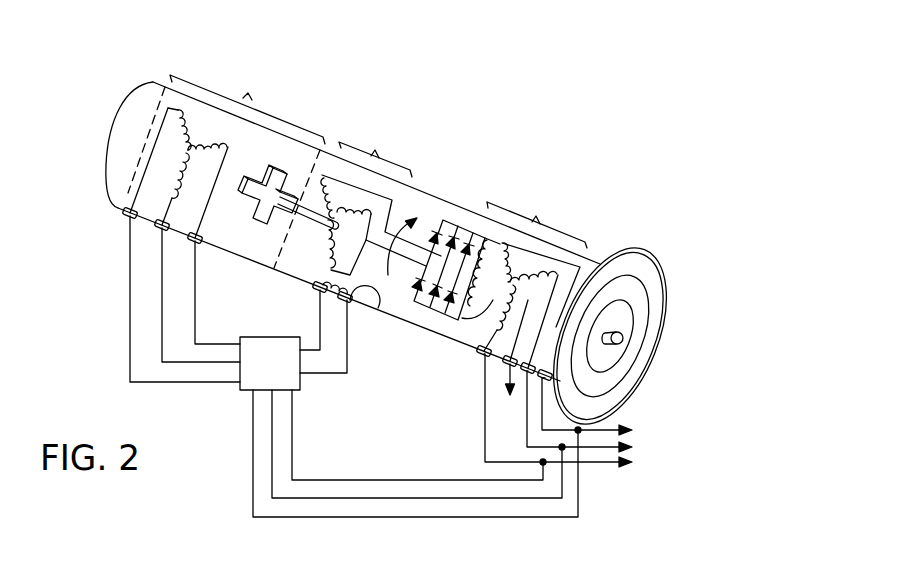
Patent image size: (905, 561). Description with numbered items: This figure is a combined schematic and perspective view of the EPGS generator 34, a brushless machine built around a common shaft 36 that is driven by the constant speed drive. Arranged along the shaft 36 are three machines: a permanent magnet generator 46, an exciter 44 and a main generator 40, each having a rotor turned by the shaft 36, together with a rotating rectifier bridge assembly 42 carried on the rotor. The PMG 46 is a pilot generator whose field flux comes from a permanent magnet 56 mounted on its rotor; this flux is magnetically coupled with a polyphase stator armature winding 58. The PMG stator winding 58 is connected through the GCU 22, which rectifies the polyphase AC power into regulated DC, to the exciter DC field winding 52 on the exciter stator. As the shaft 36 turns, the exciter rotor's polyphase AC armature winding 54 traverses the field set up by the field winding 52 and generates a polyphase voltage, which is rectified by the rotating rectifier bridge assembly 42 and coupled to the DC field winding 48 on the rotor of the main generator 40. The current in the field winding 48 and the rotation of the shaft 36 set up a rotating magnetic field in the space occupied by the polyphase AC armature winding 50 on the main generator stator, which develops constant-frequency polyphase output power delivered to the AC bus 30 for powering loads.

The GCU 22 is at (255, 337).
The AC bus 30 is at (640, 425).
The generator 34 is at (522, 132).
The common shaft 36 is at (624, 340).
The main generator 40 is at (537, 217).
The rotating rectifier bridge assembly 42 is at (455, 213).
The exciter 44 is at (375, 150).
The permanent magnet generator (PMG) 46 is at (247, 108).
The DC field winding 48 is at (480, 338).
The polyphase AC armature winding 50 is at (537, 265).
The DC field winding 52 is at (352, 288).
The polyphase AC armature winding 54 is at (342, 205).
The permanent magnet 56 is at (262, 188).
The polyphase stator armature winding 58 is at (192, 143).